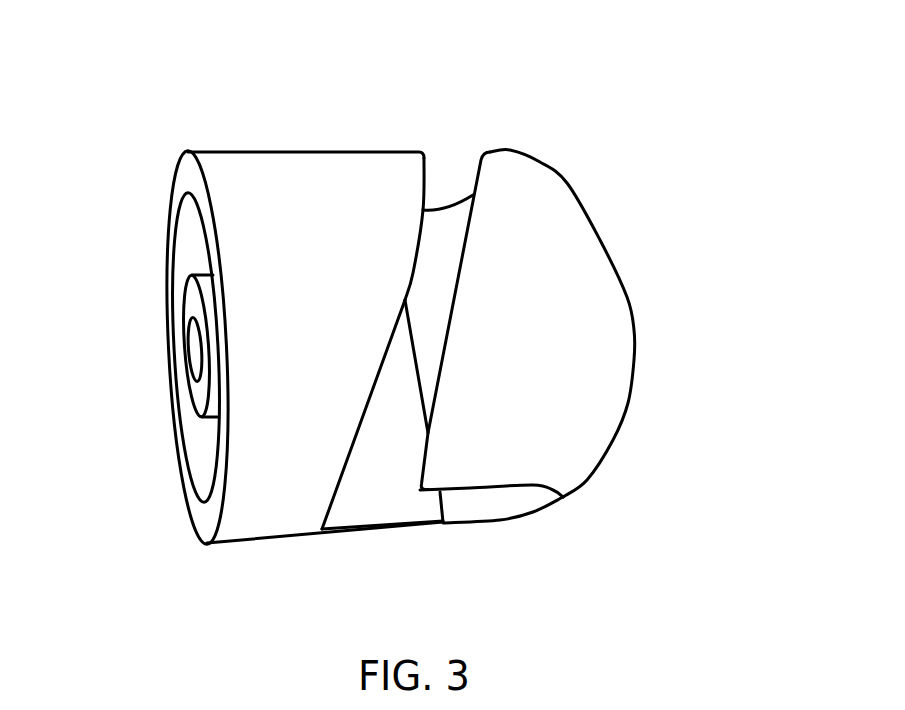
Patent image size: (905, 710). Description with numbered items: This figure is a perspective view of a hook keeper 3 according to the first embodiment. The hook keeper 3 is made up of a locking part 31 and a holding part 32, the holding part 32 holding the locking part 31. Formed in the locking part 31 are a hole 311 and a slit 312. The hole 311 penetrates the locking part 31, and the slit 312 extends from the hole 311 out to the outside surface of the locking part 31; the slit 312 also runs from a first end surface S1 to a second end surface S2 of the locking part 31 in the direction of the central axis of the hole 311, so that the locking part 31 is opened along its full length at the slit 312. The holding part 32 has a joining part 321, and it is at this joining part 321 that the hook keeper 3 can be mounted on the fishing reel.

The hook keeper 3 is at (539, 96).
The locking part 31 is at (541, 158).
The hole 311 is at (468, 155).
The slit 312 is at (360, 370).
The holding part 32 is at (242, 155).
The joining part 321 is at (178, 426).
The first end surface S1 is at (387, 142).
The second end surface S2 is at (400, 563).